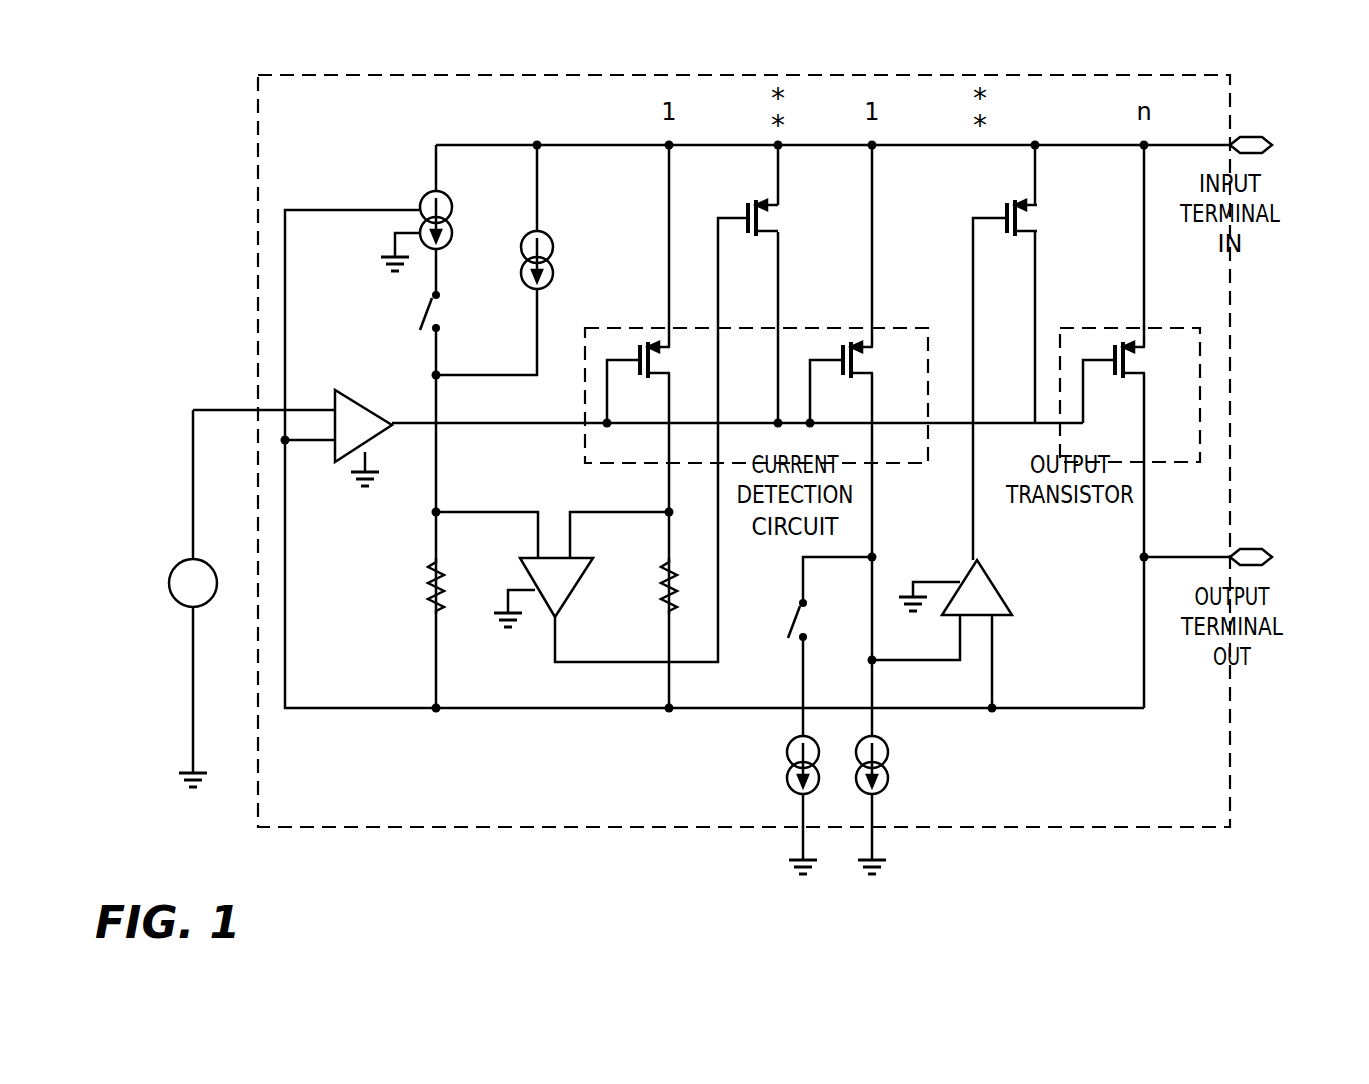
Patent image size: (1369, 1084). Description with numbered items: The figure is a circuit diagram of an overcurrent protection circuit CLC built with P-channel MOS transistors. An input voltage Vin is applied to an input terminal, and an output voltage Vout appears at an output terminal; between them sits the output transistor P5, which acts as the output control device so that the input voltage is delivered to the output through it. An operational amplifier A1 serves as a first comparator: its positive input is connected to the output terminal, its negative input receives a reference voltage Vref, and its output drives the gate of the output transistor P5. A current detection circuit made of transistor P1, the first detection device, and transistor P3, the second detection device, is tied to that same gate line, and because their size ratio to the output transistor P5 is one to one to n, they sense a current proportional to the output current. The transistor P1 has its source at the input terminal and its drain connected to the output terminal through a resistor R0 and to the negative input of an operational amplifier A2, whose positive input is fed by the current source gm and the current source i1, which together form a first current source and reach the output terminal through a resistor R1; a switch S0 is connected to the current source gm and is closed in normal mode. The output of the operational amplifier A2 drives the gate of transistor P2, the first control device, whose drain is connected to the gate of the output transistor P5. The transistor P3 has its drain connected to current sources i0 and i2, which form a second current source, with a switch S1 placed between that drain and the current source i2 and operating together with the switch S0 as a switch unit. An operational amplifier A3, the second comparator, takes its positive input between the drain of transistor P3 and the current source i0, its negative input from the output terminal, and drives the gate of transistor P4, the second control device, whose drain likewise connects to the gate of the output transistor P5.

The overcurrent protection circuit CLC is at (477, 783).
The current source gm is at (440, 231).
The current source i1 is at (551, 260).
The switch S0 is at (448, 311).
The operational amplifier A1 is at (369, 433).
The reference voltage Vref is at (223, 598).
The resistor R1 is at (417, 586).
The resistor R0 is at (650, 586).
The operational amplifier A2 is at (614, 440).
The transistor P1 is at (658, 382).
The transistor P2 is at (783, 218).
The transistor P3 is at (861, 382).
The transistor P4 is at (1025, 380).
The output transistor P5 is at (1134, 382).
The switch S1 is at (830, 647).
The current source i2 is at (793, 805).
The current source i0 is at (887, 791).
The operational amplifier A3 is at (968, 587).
The input voltage Vin is at (1275, 145).
The output voltage Vout is at (1241, 557).